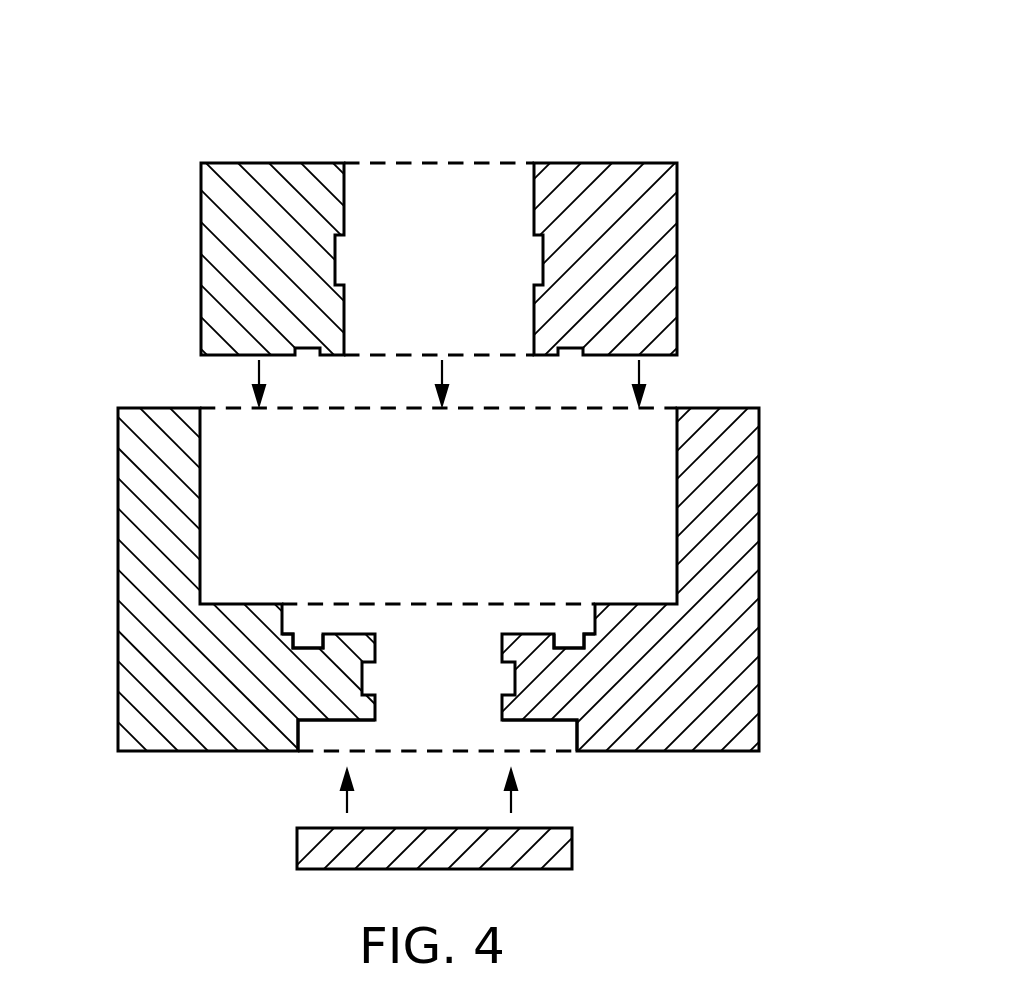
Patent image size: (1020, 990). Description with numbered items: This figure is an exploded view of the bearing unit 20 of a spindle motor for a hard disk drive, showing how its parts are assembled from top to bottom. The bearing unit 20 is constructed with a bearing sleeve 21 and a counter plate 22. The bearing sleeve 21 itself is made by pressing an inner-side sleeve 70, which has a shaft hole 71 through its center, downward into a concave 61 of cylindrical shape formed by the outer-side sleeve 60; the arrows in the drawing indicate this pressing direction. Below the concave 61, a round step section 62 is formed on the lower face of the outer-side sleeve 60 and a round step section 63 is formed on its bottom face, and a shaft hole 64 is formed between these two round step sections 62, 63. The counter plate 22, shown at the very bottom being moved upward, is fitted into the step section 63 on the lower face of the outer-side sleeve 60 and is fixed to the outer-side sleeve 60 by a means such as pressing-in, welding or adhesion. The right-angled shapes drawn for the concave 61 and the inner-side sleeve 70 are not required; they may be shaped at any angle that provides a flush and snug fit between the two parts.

The bearing unit 20 is at (510, 483).
The bearing sleeve 21 is at (510, 488).
The counter plate 22 is at (560, 843).
The outer-side sleeve 60 is at (147, 555).
The concave 61 is at (418, 517).
The round step section 62 is at (348, 622).
The round step section 63 is at (330, 737).
The shaft hole 64 is at (460, 692).
The inner-side sleeve 70 is at (227, 242).
The shaft hole 71 is at (421, 262).